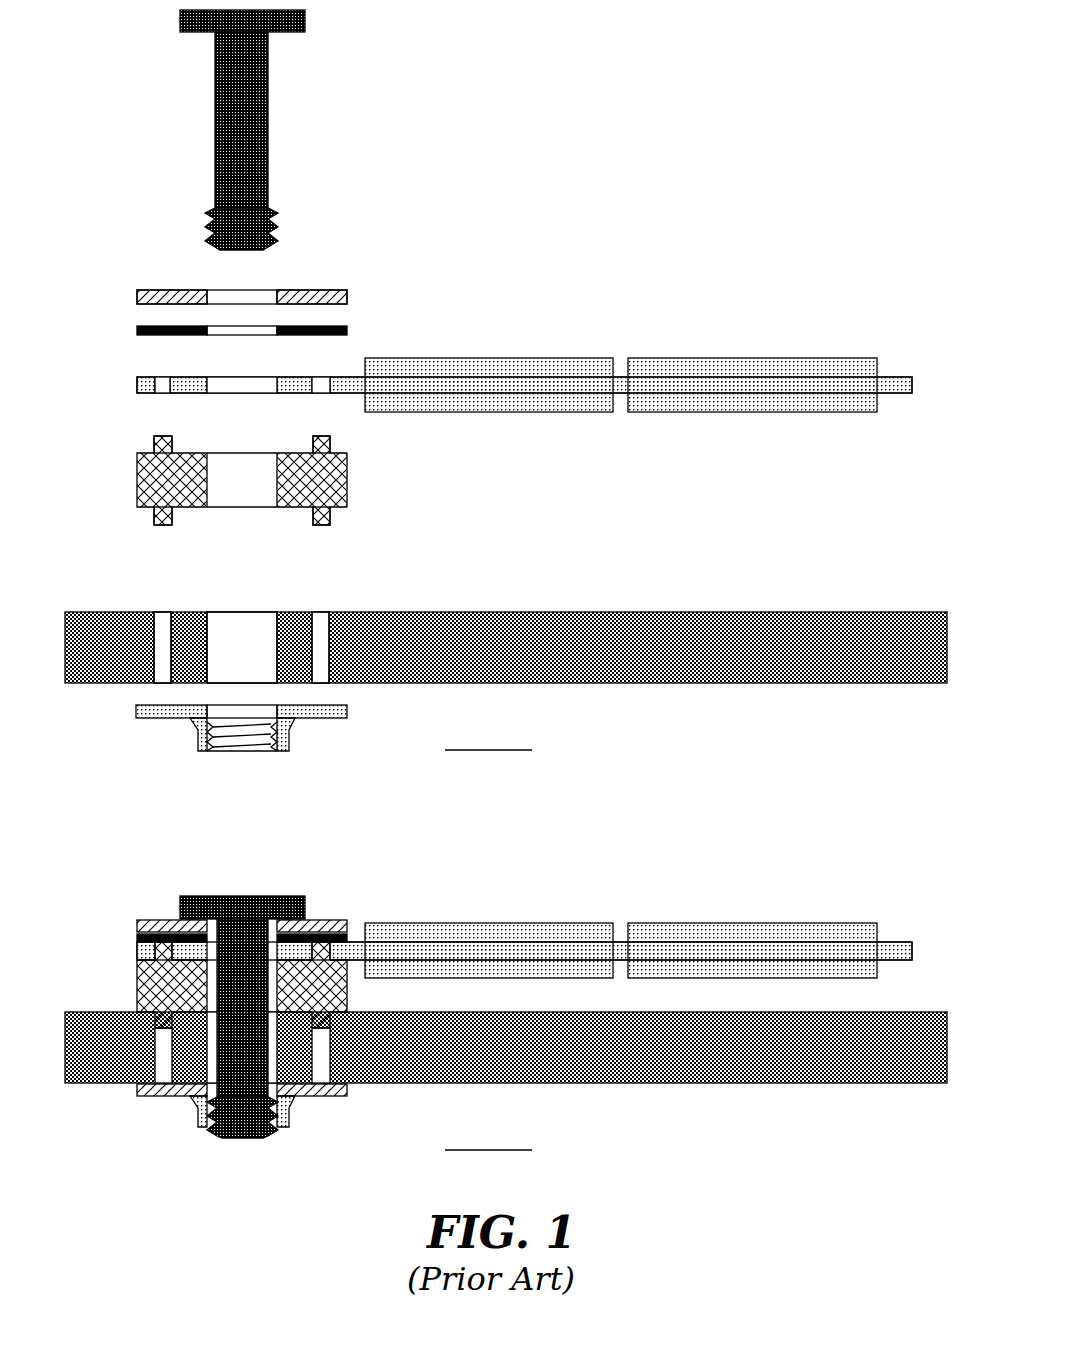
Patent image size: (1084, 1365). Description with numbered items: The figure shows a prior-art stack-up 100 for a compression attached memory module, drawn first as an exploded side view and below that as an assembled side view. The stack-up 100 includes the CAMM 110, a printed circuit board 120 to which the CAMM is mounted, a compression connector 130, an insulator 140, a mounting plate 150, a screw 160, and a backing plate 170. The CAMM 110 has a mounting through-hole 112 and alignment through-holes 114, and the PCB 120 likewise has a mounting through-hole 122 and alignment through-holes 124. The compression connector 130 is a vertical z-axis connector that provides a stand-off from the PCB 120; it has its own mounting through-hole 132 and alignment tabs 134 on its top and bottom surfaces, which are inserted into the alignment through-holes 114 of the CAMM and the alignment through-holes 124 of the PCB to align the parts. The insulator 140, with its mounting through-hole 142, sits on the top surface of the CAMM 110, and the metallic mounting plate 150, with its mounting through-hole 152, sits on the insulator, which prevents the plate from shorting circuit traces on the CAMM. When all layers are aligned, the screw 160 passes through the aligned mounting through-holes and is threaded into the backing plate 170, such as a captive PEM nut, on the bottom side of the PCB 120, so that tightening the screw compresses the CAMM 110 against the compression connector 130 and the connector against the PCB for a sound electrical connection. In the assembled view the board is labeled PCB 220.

The stack-up 100 is at (64, 790).
The compression attached memory module (CAMM) 110 is at (898, 376).
The mounting through-hole 112 is at (220, 377).
The alignment through-holes 114 is at (162, 377).
The printed circuit board (PCB) 120 is at (938, 655).
The mounting through-hole 122 is at (220, 612).
The alignment through-holes 124 is at (162, 612).
The compression connector 130 is at (137, 467).
The mounting through-hole 132 is at (222, 452).
The alignment tabs 134 is at (164, 437).
The insulator 140 is at (137, 328).
The mounting through-hole 142 is at (243, 333).
The mounting plate 150 is at (137, 297).
The mounting through-hole 152 is at (222, 290).
The screw 160 is at (181, 19).
The backing plate 170 is at (137, 711).
The printed circuit board (assembled) 220 is at (938, 1058).